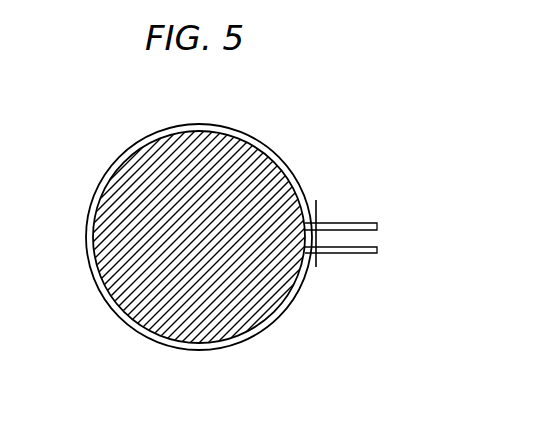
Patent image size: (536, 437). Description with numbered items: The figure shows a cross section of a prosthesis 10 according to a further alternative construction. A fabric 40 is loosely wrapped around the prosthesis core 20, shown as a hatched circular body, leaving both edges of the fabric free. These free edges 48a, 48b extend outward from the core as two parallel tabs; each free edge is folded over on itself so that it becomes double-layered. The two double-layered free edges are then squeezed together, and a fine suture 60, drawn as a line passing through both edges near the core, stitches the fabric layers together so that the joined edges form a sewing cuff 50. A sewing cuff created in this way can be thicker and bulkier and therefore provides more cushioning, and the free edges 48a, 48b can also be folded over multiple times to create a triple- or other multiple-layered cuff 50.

The sensor assembly 10 is at (212, 82).
The prosthesis core 20 is at (132, 300).
The fabric 40 is at (115, 162).
The free edge 48a is at (340, 222).
The free edge 48b is at (340, 254).
The sewing cuff 50 is at (376, 237).
The fine suture 60 is at (316, 200).